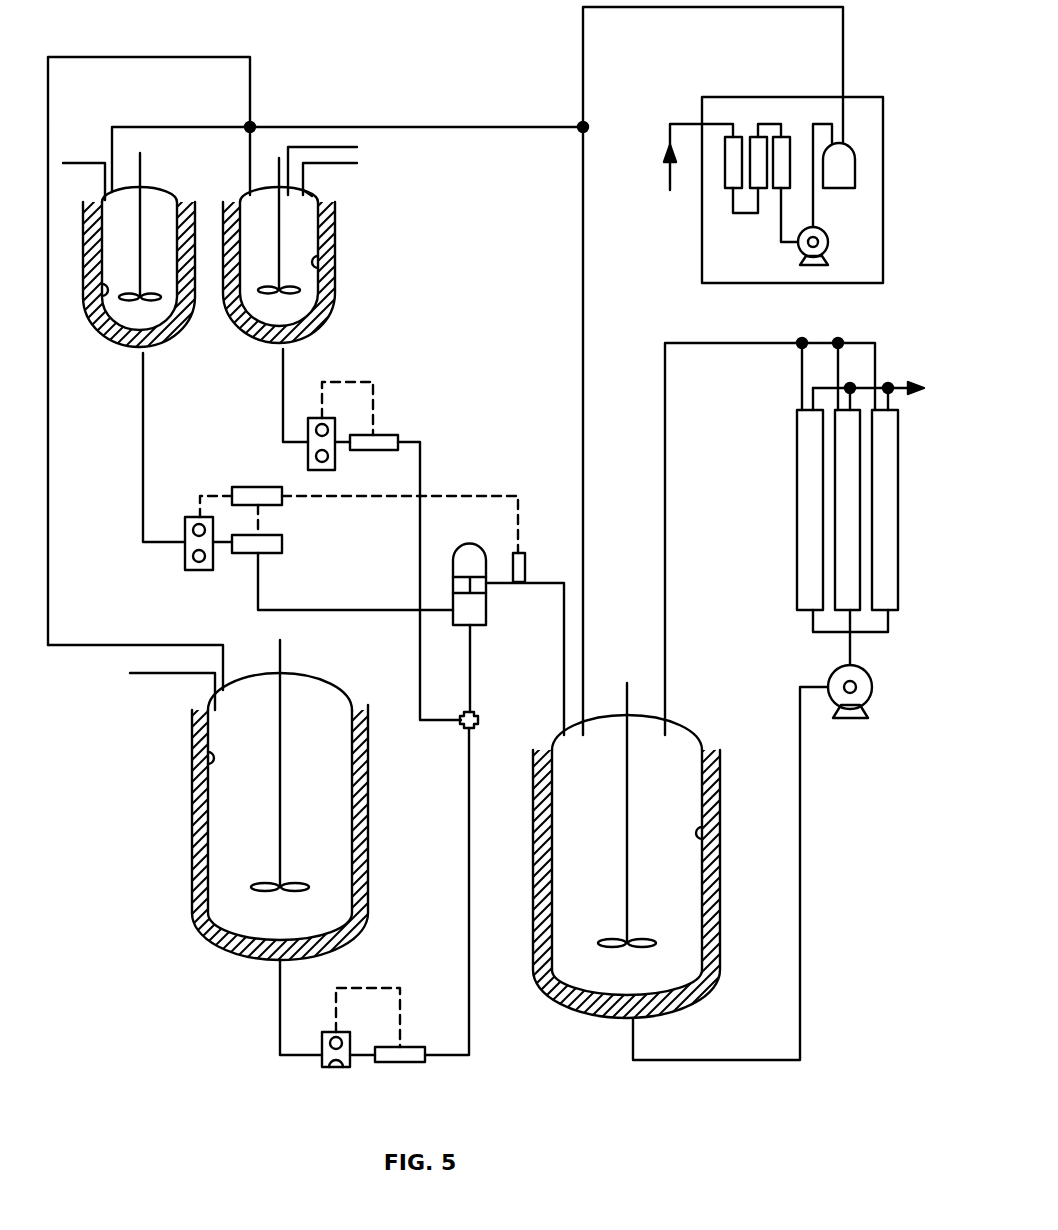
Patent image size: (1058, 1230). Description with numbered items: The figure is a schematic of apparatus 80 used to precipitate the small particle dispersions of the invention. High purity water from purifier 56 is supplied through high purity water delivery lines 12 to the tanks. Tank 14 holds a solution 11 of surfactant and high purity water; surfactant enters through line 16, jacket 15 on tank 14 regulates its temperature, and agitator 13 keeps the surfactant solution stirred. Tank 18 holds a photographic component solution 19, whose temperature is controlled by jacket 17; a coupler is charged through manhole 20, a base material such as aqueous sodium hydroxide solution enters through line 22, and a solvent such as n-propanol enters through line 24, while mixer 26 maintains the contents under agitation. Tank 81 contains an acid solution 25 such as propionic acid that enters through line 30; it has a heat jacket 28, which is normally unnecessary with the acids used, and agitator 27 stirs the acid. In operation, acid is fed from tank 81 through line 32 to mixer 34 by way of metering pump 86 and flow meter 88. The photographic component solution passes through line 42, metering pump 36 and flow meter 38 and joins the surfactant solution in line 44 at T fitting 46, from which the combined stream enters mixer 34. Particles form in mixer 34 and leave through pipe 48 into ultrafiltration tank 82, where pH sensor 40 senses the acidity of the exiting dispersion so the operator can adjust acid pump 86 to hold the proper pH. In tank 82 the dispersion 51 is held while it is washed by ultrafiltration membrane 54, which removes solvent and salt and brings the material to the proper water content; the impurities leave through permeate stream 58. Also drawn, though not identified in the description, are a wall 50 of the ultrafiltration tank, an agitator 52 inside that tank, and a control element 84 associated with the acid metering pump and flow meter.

The solution of surfactant and high purity water 11 is at (223, 739).
The high purity water delivery lines 12 is at (214, 126).
The agitator 13 is at (265, 887).
The tank 14 is at (205, 760).
The jacket 15 is at (192, 845).
The line 16 is at (175, 673).
The jacket 17 is at (325, 330).
The tank 18 is at (318, 262).
The photographic component solution 19 is at (243, 242).
The manhole 20 is at (312, 190).
The line 22 is at (345, 165).
The line 24 is at (340, 147).
The acid solution 25 is at (108, 242).
The mixer 26 is at (330, 296).
The agitator 27 is at (163, 335).
The heat jacket 28 is at (108, 348).
The line 30 is at (85, 163).
The line 32 is at (143, 425).
The mixer 34 is at (486, 620).
The metering pump 36 is at (330, 420).
The flow meter 38 is at (390, 435).
The pH sensor 40 is at (525, 568).
The line 42 is at (420, 475).
The line 44 is at (470, 770).
The T fitting 46 is at (479, 722).
The pipe 48 is at (564, 672).
The vessel jacket wall 50 is at (722, 925).
The dispersion 51 is at (565, 799).
The agitator 52 is at (615, 940).
The ultrafiltration membrane 54 is at (797, 460).
The purifier 56 is at (792, 97).
The permeate stream 58 is at (900, 388).
The apparatus 80 is at (468, 102).
The tank 81 is at (100, 295).
The ultrafiltration tank 82 is at (708, 836).
The controller 84 is at (252, 487).
The metering pump 86 is at (185, 555).
The flow meter 88 is at (270, 553).